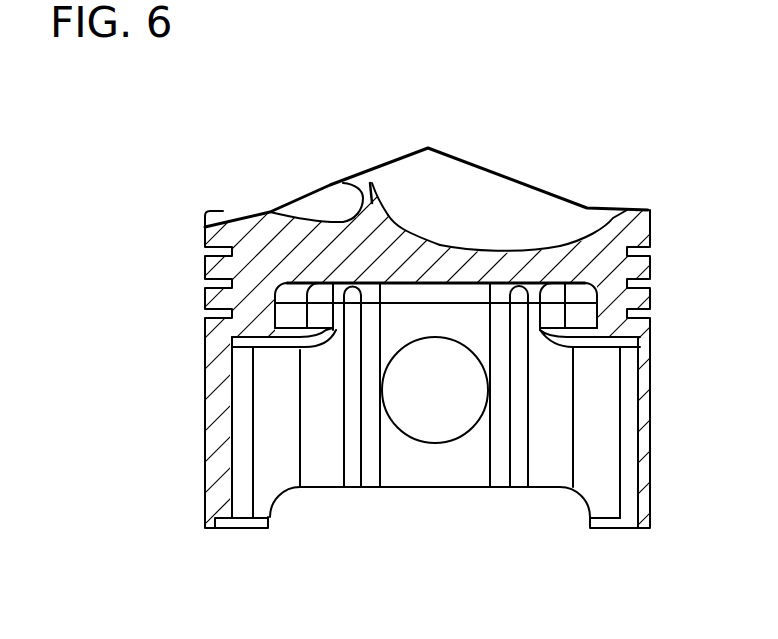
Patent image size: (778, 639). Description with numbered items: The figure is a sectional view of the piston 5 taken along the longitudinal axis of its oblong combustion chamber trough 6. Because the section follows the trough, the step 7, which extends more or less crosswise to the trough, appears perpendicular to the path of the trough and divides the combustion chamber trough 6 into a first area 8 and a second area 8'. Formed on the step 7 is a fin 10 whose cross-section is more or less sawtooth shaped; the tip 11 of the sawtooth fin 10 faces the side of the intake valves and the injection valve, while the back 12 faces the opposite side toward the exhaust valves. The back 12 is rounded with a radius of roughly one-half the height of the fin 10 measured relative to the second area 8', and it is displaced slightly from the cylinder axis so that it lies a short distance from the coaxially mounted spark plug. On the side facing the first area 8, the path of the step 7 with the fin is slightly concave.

The piston 5 is at (176, 284).
The combustion chamber trough 6 is at (505, 207).
The step 7 is at (403, 231).
The first area 8 is at (593, 193).
The second area 8' is at (295, 173).
The fin 10 is at (372, 182).
The tip 11 is at (321, 208).
The back 12 is at (387, 227).